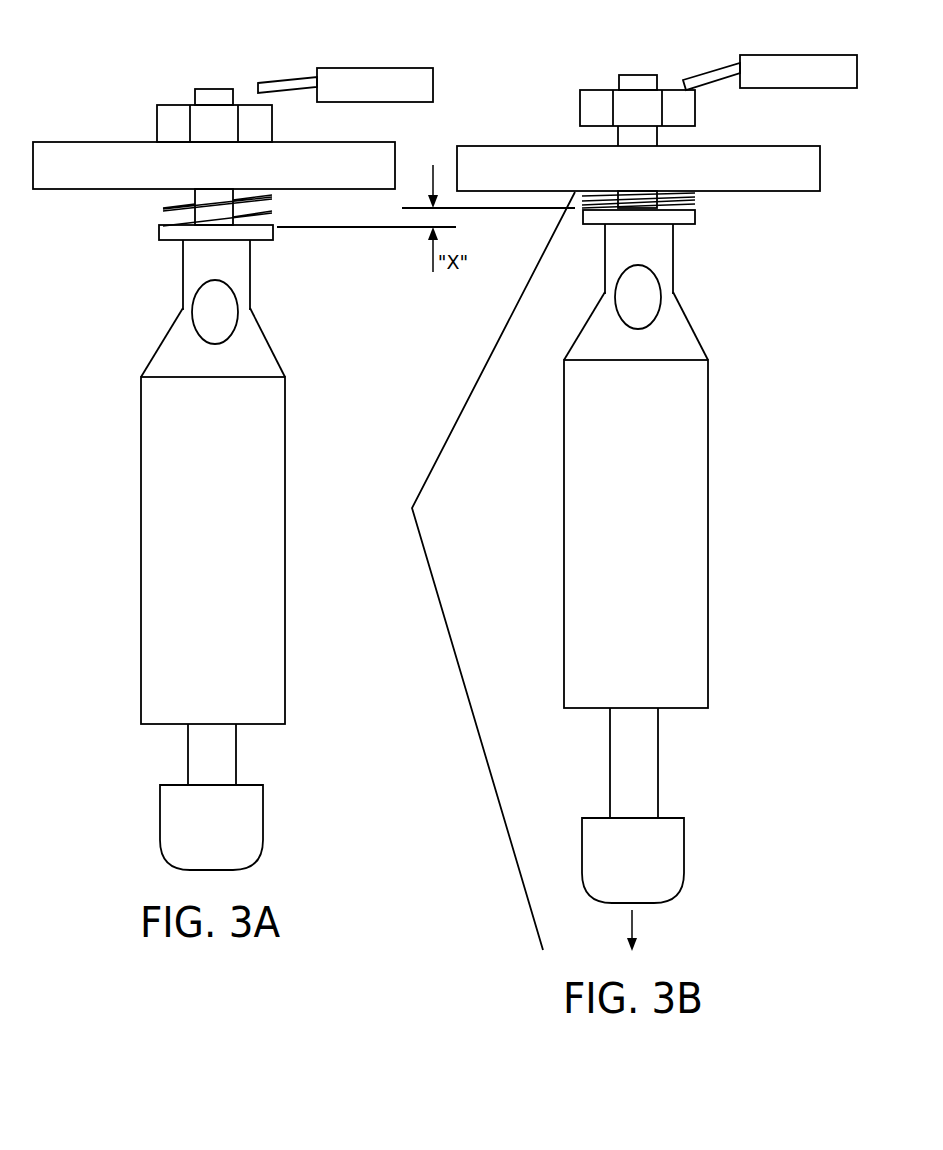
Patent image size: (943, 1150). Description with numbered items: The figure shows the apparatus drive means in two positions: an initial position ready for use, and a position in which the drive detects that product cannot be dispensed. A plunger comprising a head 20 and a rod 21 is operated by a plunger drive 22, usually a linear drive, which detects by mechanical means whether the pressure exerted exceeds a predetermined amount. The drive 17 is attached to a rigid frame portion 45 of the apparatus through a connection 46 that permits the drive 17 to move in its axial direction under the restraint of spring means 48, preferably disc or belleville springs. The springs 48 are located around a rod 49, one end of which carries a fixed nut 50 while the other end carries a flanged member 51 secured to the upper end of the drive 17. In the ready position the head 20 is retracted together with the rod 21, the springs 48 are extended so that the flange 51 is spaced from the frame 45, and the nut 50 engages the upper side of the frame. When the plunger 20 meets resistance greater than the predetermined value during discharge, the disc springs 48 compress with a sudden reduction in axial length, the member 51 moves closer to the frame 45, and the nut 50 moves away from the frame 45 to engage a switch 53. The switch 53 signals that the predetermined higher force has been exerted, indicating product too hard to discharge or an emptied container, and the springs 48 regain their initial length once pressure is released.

In FIG. 3A, the drive 17 is at (128, 618).
In FIG. 3B, the drive 17 is at (629, 486).
In FIG. 3A, the plunger head 20 is at (167, 814).
In FIG. 3B, the plunger head 20 is at (588, 850).
In FIG. 3A, the plunger rod 21 is at (228, 755).
In FIG. 3B, the plunger rod 21 is at (650, 740).
In FIG. 3B, the plunger drive 22 is at (700, 455).
In FIG. 3A, the rigid frame portion 45 is at (48, 178).
In FIG. 3B, the rigid frame portion 45 is at (468, 152).
In FIG. 3B, the connection 46 is at (600, 94).
In FIG. 3A, the spring means 48 is at (164, 208).
In FIG. 3B, the spring means 48 is at (698, 210).
In FIG. 3A, the rod 49 is at (215, 89).
In FIG. 3A, the fixed nut 50 is at (164, 122).
In FIG. 3B, the fixed nut 50 is at (592, 97).
In FIG. 3A, the flanged member 51 is at (270, 243).
In FIG. 3B, the flanged member 51 is at (690, 226).
In FIG. 3A, the switch 53 is at (378, 68).
In FIG. 3B, the switch 53 is at (800, 55).